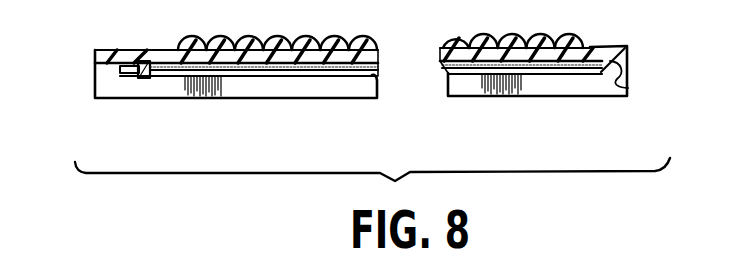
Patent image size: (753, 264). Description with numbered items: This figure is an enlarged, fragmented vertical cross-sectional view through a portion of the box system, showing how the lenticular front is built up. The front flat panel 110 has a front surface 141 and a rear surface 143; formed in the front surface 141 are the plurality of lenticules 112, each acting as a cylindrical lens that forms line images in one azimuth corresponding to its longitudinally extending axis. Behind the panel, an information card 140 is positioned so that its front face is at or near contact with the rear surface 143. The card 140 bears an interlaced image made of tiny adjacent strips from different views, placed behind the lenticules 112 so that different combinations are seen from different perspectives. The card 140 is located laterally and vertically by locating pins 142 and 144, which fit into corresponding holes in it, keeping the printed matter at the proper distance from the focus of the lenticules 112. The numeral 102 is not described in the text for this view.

The strip 102 is at (86, 80).
The front flat panel 110 is at (99, 42).
The lenticules 112 is at (253, 58).
The information card 140 is at (264, 68).
The front surface 141 is at (150, 62).
The locating pin 142 is at (156, 78).
The rear surface 143 is at (114, 66).
The locating pin 144 is at (628, 88).